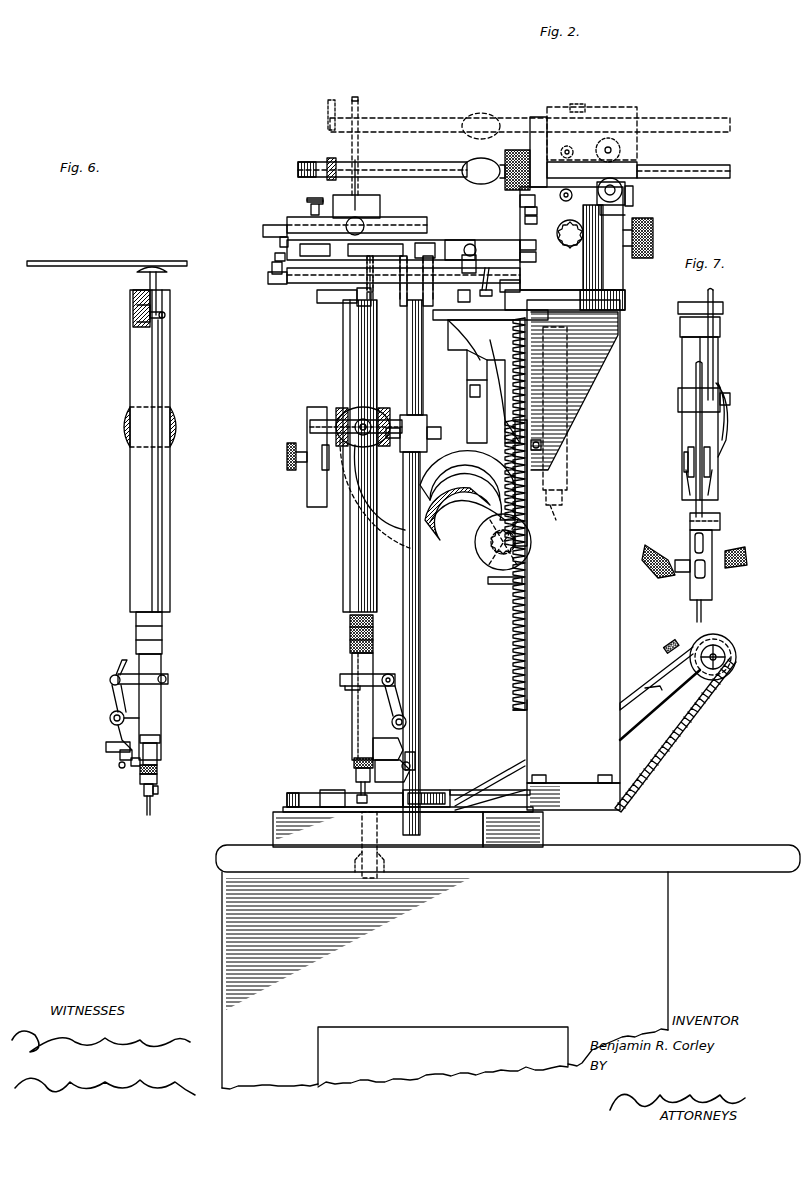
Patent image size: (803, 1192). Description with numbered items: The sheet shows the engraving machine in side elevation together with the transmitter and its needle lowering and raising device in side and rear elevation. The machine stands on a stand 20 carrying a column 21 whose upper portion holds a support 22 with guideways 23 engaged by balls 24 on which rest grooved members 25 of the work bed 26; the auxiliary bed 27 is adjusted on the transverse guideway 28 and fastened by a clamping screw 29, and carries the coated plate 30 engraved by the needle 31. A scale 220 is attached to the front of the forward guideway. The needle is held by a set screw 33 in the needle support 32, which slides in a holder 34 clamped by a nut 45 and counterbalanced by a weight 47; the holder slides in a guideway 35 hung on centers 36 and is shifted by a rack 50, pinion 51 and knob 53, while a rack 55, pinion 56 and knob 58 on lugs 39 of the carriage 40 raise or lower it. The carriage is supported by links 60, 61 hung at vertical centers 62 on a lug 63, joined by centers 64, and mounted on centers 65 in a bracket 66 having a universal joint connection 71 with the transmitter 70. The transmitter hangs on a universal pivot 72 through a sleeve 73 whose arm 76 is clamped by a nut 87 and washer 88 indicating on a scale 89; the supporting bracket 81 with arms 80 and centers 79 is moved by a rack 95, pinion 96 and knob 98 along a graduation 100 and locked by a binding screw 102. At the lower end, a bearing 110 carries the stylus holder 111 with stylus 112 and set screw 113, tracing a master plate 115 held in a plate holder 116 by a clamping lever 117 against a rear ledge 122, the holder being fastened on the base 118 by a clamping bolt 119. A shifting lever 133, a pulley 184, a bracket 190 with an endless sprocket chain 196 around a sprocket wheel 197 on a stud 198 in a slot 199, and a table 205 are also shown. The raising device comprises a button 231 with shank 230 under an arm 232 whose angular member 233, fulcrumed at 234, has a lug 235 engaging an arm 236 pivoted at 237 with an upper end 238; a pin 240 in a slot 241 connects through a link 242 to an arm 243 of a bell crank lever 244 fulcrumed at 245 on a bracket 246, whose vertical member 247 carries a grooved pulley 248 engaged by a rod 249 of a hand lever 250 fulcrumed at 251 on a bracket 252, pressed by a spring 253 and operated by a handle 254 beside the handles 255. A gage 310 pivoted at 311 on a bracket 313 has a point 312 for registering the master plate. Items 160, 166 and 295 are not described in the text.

In FIG. 2, the stand 20 is at (508, 967).
In FIG. 2, the column 21 is at (573, 541).
In FIG. 2, the support 22 is at (318, 284).
In FIG. 2, the guideways 23 is at (274, 274).
In FIG. 2, the balls 24 is at (275, 260).
In FIG. 2, the grooved members 25 is at (280, 243).
In FIG. 2, the work bed 26 is at (455, 243).
In FIG. 2, the auxiliary bed 27 is at (292, 217).
In FIG. 2, the transverse guideway 28 is at (263, 228).
In FIG. 2, the clamping screw 29 is at (354, 235).
In FIG. 2, the coated plate 30 is at (333, 198).
In FIG. 2, the needle 31 is at (359, 156).
In FIG. 2, the needle support 32 is at (442, 114).
In FIG. 2, the set screw 33 is at (332, 158).
In FIG. 2, the holder 34 is at (538, 150).
In FIG. 2, the guideway 35 is at (637, 166).
In FIG. 2, the centers 36 is at (571, 236).
In FIG. 2, the lugs 39 is at (603, 288).
In FIG. 2, the carriage 40 is at (511, 294).
In FIG. 2, the nut 45 is at (510, 160).
In FIG. 2, the counterbalancing weight 47 is at (481, 148).
In FIG. 2, the rack 50 is at (628, 190).
In FIG. 2, the pinion 51 is at (633, 200).
In FIG. 2, the knob 53 is at (625, 208).
In FIG. 2, the rack 55 is at (580, 285).
In FIG. 2, the pinion 56 is at (605, 255).
In FIG. 2, the knob 58 is at (557, 240).
In FIG. 2, the link 60 is at (492, 368).
In FIG. 2, the link 61 is at (490, 384).
In FIG. 2, the vertical centers 62 is at (538, 329).
In FIG. 2, the lug 63 is at (560, 420).
In FIG. 2, the vertical centers 64 is at (480, 345).
In FIG. 2, the vertical centers 65 is at (462, 404).
In FIG. 2, the bracket 66 is at (407, 371).
In FIG. 2, the transmitter 70 is at (348, 536).
In FIG. 6, the transmitter 70 is at (140, 514).
In FIG. 2, the universal joint connection 71 is at (335, 303).
In FIG. 2, the universal pivot 72 is at (340, 417).
In FIG. 2, the sleeve 73 is at (385, 408).
In FIG. 6, the sleeve 73 is at (128, 418).
In FIG. 2, the arm 76 is at (310, 440).
In FIG. 2, the centers 79 is at (358, 420).
In FIG. 2, the arms 80 is at (358, 480).
In FIG. 2, the bracket 81 is at (500, 584).
In FIG. 2, the nut 87 is at (287, 458).
In FIG. 2, the washer 88 is at (307, 478).
In FIG. 2, the scale 89 is at (307, 412).
In FIG. 2, the rack 95 is at (515, 645).
In FIG. 2, the pinion 96 is at (474, 546).
In FIG. 2, the knob 98 is at (478, 560).
In FIG. 2, the graduation 100 is at (528, 633).
In FIG. 2, the binding screw 102 is at (490, 568).
In FIG. 2, the bearing 110 is at (352, 708).
In FIG. 6, the bearing 110 is at (161, 696).
In FIG. 7, the bearing 110 is at (710, 490).
In FIG. 6, the stylus holder 111 is at (157, 750).
In FIG. 2, the stylus 112 is at (361, 790).
In FIG. 6, the stylus 112 is at (146, 800).
In FIG. 7, the stylus 112 is at (697, 610).
In FIG. 2, the set screw 113 is at (356, 774).
In FIG. 6, the set screw 113 is at (158, 789).
In FIG. 2, the master plate 115 is at (368, 796).
In FIG. 2, the plate holder 116 is at (352, 812).
In FIG. 2, the clamping lever 117 is at (302, 793).
In FIG. 2, the base 118 is at (273, 828).
In FIG. 2, the clamping bolt 119 is at (362, 840).
In FIG. 2, the rear ledge 122 is at (416, 794).
In FIG. 2, the shifting lever 133 is at (421, 591).
In FIG. 2, the cam segment 160 is at (467, 481).
In FIG. 2, the cam 166 is at (458, 462).
In FIG. 2, the pulley 184 is at (450, 815).
In FIG. 2, the bracket 190 is at (650, 713).
In FIG. 2, the endless sprocket chain 196 is at (676, 733).
In FIG. 2, the sprocket wheel 197 is at (713, 634).
In FIG. 2, the stud 198 is at (732, 665).
In FIG. 2, the slot 199 is at (728, 650).
In FIG. 2, the table 205 is at (650, 678).
In FIG. 2, the scale 220 is at (283, 286).
In FIG. 6, the shank 230 is at (158, 283).
In FIG. 6, the button 231 is at (140, 270).
In FIG. 2, the arm 232 is at (490, 286).
In FIG. 6, the arm 232 is at (107, 251).
In FIG. 2, the angular member 233 is at (520, 245).
In FIG. 2, the fulcrum 234 is at (525, 212).
In FIG. 2, the lug 235 is at (520, 257).
In FIG. 2, the arm 236 is at (525, 222).
In FIG. 2, the pivot 237 is at (520, 201).
In FIG. 2, the upper end 238 is at (565, 130).
In FIG. 6, the pin 240 is at (166, 315).
In FIG. 6, the slot 241 is at (150, 320).
In FIG. 6, the link 242 is at (162, 392).
In FIG. 7, the link 242 is at (714, 293).
In FIG. 6, the arm 243 is at (168, 677).
In FIG. 6, the bell crank lever 244 is at (118, 700).
In FIG. 2, the fulcrum 245 is at (388, 672).
In FIG. 6, the fulcrum 245 is at (110, 681).
In FIG. 2, the bracket 246 is at (356, 683).
In FIG. 6, the bracket 246 is at (168, 684).
In FIG. 7, the bracket 246 is at (678, 398).
In FIG. 2, the vertical member 247 is at (390, 700).
In FIG. 6, the vertical member 247 is at (110, 718).
In FIG. 7, the vertical member 247 is at (727, 432).
In FIG. 2, the grooved pulley 248 is at (406, 720).
In FIG. 6, the grooved pulley 248 is at (161, 718).
In FIG. 7, the grooved pulley 248 is at (688, 460).
In FIG. 2, the rod 249 is at (403, 745).
In FIG. 6, the rod 249 is at (120, 661).
In FIG. 7, the rod 249 is at (696, 490).
In FIG. 2, the hand lever 250 is at (412, 760).
In FIG. 6, the hand lever 250 is at (112, 752).
In FIG. 7, the hand lever 250 is at (690, 533).
In FIG. 6, the fulcrum 251 is at (160, 739).
In FIG. 7, the fulcrum 251 is at (720, 524).
In FIG. 6, the bracket 252 is at (157, 770).
In FIG. 6, the spring 253 is at (140, 762).
In FIG. 2, the handle 254 is at (412, 770).
In FIG. 6, the handle 254 is at (120, 767).
In FIG. 7, the handle 254 is at (672, 572).
In FIG. 2, the handles 255 is at (354, 760).
In FIG. 6, the handles 255 is at (141, 780).
In FIG. 7, the handles 255 is at (648, 547).
In FIG. 7, the screw 295 is at (732, 399).
In FIG. 2, the gage 310 is at (490, 785).
In FIG. 2, the pivot 311 is at (481, 781).
In FIG. 2, the point 312 is at (528, 778).
In FIG. 2, the bracket 313 is at (490, 800).